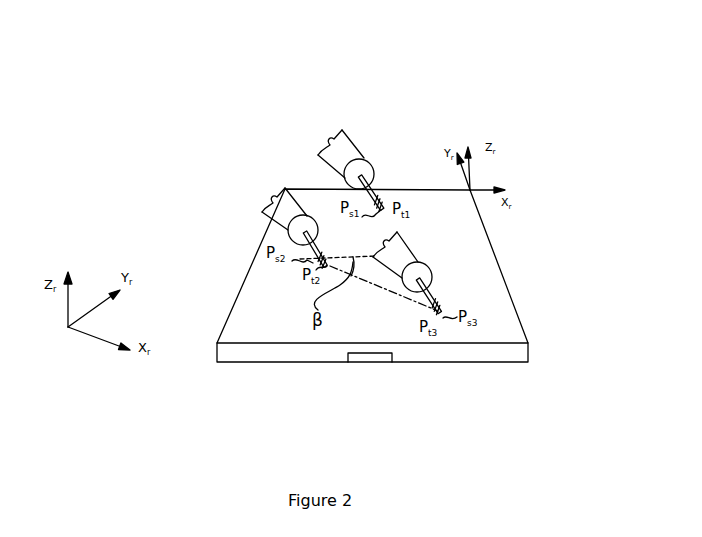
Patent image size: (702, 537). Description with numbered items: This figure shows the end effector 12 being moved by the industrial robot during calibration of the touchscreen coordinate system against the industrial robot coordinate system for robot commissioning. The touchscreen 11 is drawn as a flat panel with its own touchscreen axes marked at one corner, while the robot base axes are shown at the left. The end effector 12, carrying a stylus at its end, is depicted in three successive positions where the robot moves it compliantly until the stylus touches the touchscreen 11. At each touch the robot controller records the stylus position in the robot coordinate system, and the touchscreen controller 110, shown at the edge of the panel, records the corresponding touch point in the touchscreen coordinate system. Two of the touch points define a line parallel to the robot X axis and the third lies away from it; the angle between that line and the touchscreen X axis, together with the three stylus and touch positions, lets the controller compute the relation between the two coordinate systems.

The touchscreen 11 is at (508, 330).
The end effector 12 is at (378, 188).
The touchscreen controller 110 is at (348, 363).